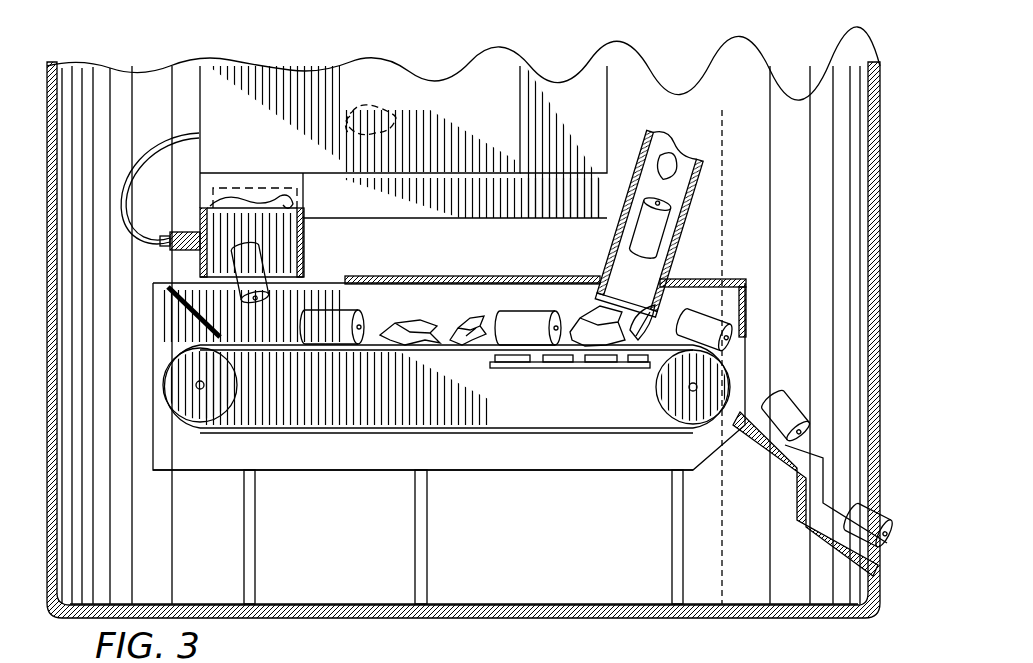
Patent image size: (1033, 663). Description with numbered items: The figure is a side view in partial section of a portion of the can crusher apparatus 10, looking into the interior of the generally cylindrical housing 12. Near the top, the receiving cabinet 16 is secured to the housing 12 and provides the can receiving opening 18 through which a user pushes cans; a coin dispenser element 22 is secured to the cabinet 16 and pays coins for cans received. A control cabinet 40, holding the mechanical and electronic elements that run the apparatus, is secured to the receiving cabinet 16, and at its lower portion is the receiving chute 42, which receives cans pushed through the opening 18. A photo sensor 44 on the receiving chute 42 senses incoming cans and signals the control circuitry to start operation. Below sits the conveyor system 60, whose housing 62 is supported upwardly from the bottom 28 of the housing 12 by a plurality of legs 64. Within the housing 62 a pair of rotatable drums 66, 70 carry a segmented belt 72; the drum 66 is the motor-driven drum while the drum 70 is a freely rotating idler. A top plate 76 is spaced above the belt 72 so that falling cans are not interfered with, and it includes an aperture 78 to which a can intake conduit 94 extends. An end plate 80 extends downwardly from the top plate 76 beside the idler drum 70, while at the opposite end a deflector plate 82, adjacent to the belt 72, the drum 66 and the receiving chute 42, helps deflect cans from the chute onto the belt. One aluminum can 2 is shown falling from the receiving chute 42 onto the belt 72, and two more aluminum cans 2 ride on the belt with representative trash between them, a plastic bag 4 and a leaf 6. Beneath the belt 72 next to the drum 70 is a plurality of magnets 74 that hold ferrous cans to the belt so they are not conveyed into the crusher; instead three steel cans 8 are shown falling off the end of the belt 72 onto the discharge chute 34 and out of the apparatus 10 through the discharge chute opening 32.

The aluminum can 2 is at (322, 320).
The plastic bag 4 is at (422, 322).
The leaf 6 is at (465, 326).
The ferrous metal can 8 is at (782, 390).
The can crusher apparatus 10 is at (890, 106).
The housing 12 is at (879, 140).
The receiving cabinet 16 is at (607, 92).
The can receiving opening 18 is at (291, 200).
The coin dispenser element 22 is at (372, 110).
The bottom 28 is at (583, 604).
The discharge chute opening 32 is at (888, 508).
The discharge chute 34 is at (796, 478).
The control cabinet 40 is at (513, 120).
The receiving chute 42 is at (304, 250).
The photo sensor 44 is at (172, 232).
The conveyor system 60 is at (148, 350).
The housing 62 is at (195, 472).
The legs 64 is at (255, 574).
The driving drum 66 is at (238, 386).
The idler drum 70 is at (670, 392).
The segmented belt 72 is at (298, 355).
The magnets 74 is at (590, 368).
The top plate 76 is at (478, 262).
The aperture 78 is at (660, 272).
The end plate 80 is at (746, 296).
The deflector plate 82 is at (222, 322).
The can intake conduit 94 is at (684, 206).